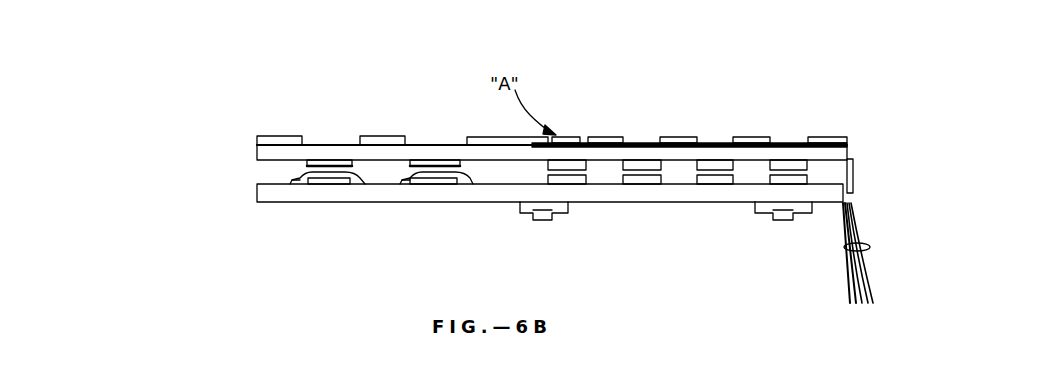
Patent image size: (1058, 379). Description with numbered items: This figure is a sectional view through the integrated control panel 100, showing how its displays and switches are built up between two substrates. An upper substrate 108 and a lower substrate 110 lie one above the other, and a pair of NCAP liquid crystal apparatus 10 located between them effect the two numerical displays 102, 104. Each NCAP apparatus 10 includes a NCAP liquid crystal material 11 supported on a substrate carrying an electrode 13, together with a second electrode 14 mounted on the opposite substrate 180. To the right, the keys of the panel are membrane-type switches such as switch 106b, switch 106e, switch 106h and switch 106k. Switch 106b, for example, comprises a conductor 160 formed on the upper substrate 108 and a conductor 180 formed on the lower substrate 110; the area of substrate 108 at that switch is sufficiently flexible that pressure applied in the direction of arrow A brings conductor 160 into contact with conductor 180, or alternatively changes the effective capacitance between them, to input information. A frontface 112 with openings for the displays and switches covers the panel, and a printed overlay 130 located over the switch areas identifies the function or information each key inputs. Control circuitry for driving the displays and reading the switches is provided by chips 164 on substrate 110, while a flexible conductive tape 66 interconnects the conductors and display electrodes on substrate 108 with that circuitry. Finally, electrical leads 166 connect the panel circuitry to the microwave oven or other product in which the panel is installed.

The NCAP liquid crystal apparatus 10 is at (262, 172).
The NCAP liquid crystal material 11 is at (293, 180).
The electrode 13 is at (322, 183).
The second electrode 14 is at (317, 162).
The flexible conductive tape 66 is at (855, 173).
The control panel 100 is at (799, 71).
The display 102 is at (333, 142).
The display 104 is at (437, 145).
The switch 106b is at (570, 137).
The switch 106e is at (647, 138).
The switch 106h is at (712, 138).
The switch 106k is at (783, 138).
The substrate 108 is at (815, 155).
The substrate 110 is at (650, 195).
The frontface 112 is at (485, 137).
The printed overlay 130 is at (847, 147).
The conductor 160 is at (578, 165).
The chips 164 is at (548, 220).
The electrical leads 166 is at (847, 247).
The conductor 180 is at (580, 178).